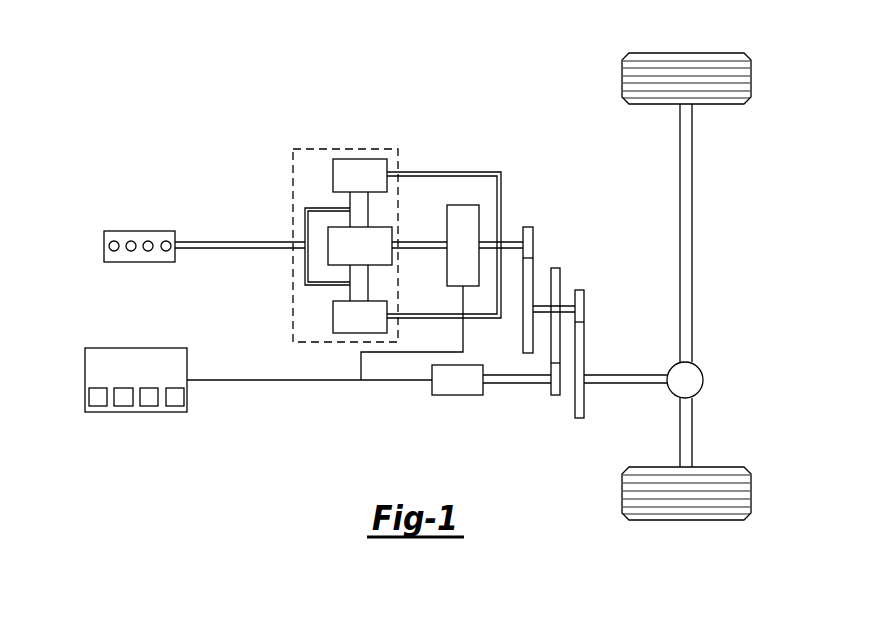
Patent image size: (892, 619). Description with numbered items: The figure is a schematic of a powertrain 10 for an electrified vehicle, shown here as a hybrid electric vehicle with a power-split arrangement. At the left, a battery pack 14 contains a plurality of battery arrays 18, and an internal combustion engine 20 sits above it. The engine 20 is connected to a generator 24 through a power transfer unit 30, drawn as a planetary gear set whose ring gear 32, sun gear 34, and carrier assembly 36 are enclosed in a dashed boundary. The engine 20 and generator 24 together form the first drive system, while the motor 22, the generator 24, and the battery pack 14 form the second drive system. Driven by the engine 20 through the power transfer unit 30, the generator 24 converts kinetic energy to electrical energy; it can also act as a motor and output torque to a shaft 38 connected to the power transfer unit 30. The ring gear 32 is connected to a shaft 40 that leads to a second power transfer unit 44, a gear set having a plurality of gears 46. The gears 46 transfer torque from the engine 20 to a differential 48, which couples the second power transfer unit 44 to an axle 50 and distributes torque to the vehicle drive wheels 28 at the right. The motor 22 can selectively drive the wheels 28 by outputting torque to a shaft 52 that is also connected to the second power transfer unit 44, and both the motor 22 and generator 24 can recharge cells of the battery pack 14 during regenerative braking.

The powertrain 10 is at (172, 83).
The battery pack 14 is at (137, 348).
The battery arrays 18 is at (97, 412).
The internal combustion engine 20 is at (106, 231).
The motor 22 is at (458, 395).
The generator 24 is at (479, 217).
The vehicle drive wheels 28 is at (751, 78).
The power transfer unit 30 is at (400, 152).
The ring gear 32 is at (333, 176).
The sun gear 34 is at (380, 265).
The carrier assembly 36 is at (305, 228).
The shaft 38 is at (423, 242).
The shaft 40 is at (514, 250).
The second power transfer unit 44 is at (594, 319).
The gears 46 is at (533, 236).
The differential 48 is at (703, 380).
The axle 50 is at (692, 236).
The shaft 52 is at (517, 383).